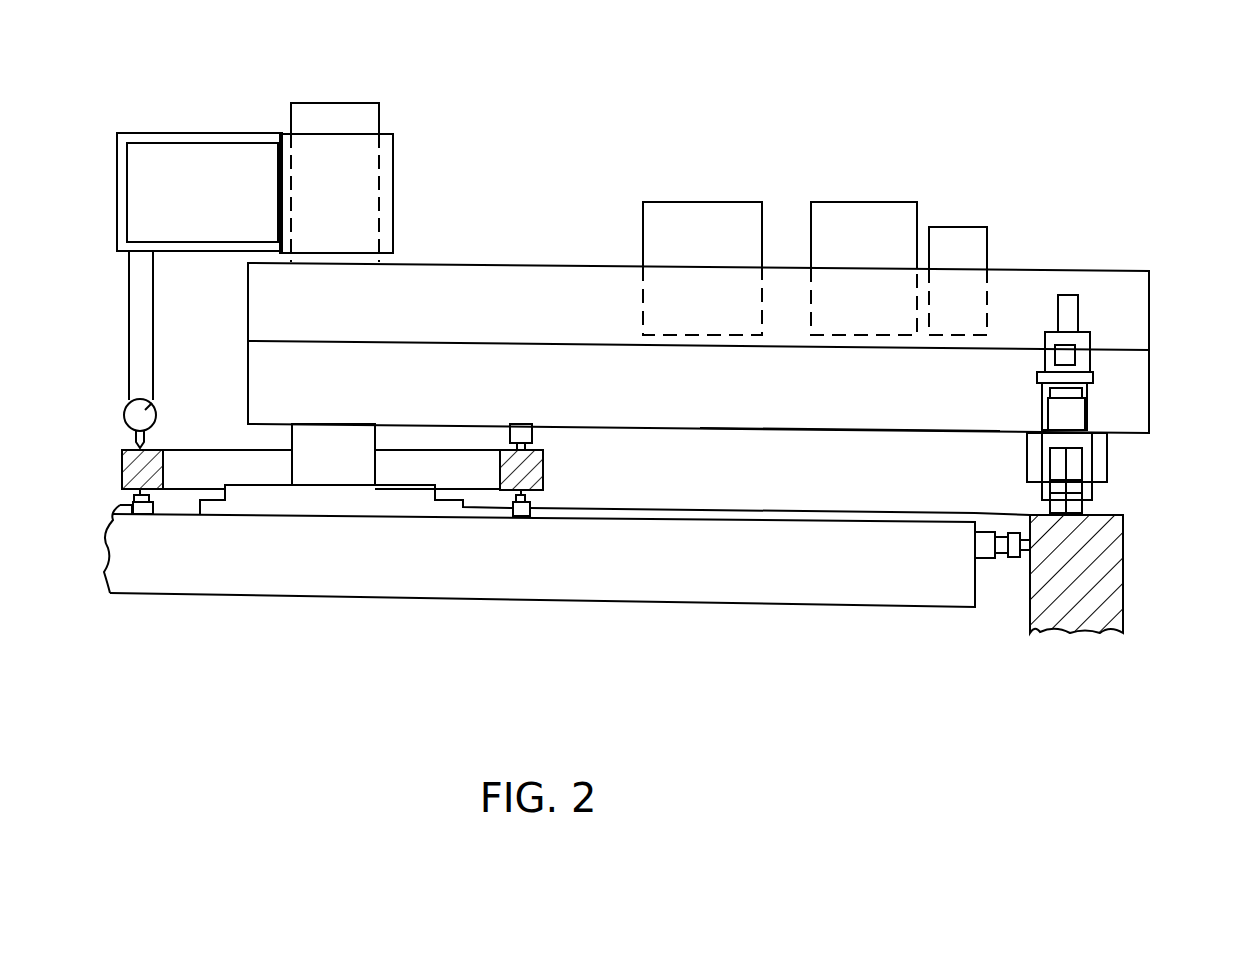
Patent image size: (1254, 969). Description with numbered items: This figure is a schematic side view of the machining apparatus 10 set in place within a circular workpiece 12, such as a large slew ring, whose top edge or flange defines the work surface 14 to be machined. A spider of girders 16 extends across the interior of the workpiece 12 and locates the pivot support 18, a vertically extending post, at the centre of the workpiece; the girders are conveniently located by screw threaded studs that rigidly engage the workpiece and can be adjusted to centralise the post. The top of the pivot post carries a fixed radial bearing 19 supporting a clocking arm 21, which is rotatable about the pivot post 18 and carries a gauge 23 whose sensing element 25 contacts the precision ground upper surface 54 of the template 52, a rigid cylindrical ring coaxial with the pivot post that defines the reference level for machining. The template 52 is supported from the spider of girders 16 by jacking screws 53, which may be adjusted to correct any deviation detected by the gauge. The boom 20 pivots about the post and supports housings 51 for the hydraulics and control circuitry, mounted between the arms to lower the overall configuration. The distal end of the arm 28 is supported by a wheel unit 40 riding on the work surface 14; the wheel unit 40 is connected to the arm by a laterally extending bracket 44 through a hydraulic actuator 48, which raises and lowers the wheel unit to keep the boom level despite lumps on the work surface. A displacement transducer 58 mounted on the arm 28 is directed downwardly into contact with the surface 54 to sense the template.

The machining apparatus 10 is at (1052, 183).
The circular workpiece 12 is at (1125, 583).
The work surface 14 is at (1098, 512).
The spider of girders 16 is at (835, 565).
The pivot support 18 is at (330, 447).
The fixed radial bearing 19 is at (393, 185).
The boom 20 is at (595, 263).
The clocking arm 21 is at (168, 133).
The gauge 23 is at (128, 402).
The sensing element 25 is at (122, 450).
The arm 28 is at (818, 403).
The wheel unit 40 is at (1107, 468).
The bracket 44 is at (1072, 413).
The hydraulic actuator 48 is at (1095, 362).
The housings 51 is at (700, 202).
The template 52 is at (545, 492).
The jacking screws 53 is at (146, 514).
The upper surface 54 is at (500, 451).
The displacement transducer 58 is at (528, 432).